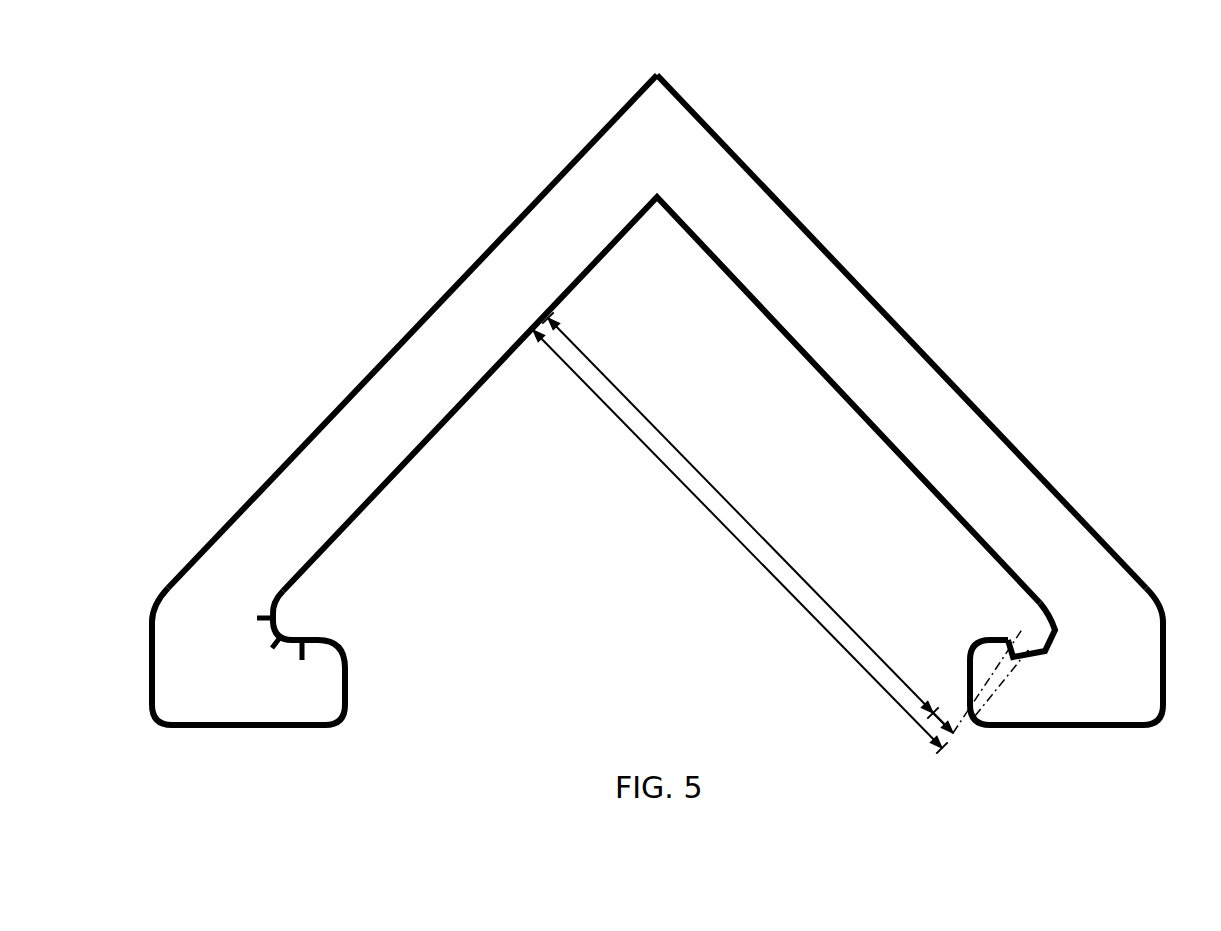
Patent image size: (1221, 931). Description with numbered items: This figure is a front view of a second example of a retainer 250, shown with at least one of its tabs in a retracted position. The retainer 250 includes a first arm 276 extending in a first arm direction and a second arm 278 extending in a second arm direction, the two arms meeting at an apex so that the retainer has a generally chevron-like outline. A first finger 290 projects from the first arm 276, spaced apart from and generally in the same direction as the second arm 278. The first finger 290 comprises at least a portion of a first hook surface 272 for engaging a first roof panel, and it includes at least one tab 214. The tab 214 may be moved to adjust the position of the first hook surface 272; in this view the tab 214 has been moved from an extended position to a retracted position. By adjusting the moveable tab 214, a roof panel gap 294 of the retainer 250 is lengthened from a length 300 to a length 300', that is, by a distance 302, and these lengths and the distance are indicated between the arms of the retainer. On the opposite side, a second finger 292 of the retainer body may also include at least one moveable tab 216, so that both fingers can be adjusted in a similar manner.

The retainer 250 is at (904, 120).
The second arm 278 is at (502, 272).
The first arm 276 is at (900, 360).
The moveable tab 216 is at (277, 613).
The tab 214 is at (1062, 657).
The second finger 292 is at (247, 641).
The first hook surface 272 is at (1036, 632).
The first finger 290 is at (1037, 705).
The roof panel gap 294 is at (760, 365).
The length 300 is at (747, 522).
The length 300' is at (737, 538).
The distance 302 is at (936, 714).